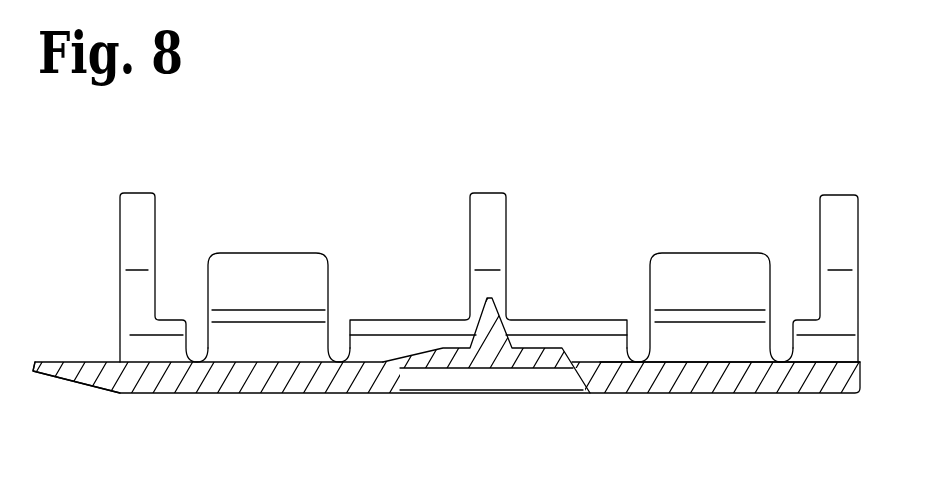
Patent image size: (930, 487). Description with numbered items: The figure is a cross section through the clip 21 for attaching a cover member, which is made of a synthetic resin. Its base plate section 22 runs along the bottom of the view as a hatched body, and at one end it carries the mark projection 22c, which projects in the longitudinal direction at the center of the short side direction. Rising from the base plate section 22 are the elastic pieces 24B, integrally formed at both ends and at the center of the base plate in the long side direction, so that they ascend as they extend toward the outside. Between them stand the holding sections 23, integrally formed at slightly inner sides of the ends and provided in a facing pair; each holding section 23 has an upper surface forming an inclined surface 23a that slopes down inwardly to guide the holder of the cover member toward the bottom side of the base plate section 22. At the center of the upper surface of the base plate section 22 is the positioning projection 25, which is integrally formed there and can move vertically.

The clip 21 is at (289, 398).
The base plate section 22 is at (695, 375).
The mark projection 22c is at (66, 368).
The holding section 23 is at (312, 245).
The inclined surface 23a is at (250, 282).
The elastic piece 24B is at (137, 218).
The positioning projection 25 is at (490, 312).